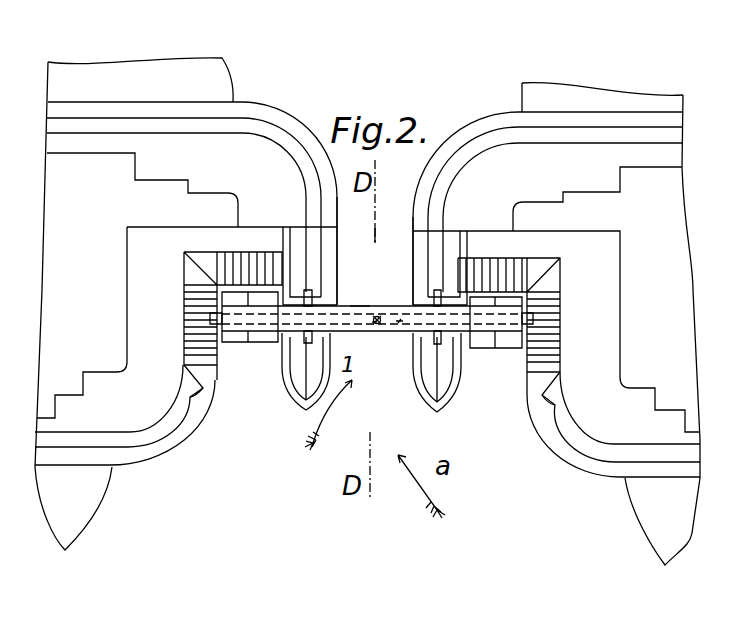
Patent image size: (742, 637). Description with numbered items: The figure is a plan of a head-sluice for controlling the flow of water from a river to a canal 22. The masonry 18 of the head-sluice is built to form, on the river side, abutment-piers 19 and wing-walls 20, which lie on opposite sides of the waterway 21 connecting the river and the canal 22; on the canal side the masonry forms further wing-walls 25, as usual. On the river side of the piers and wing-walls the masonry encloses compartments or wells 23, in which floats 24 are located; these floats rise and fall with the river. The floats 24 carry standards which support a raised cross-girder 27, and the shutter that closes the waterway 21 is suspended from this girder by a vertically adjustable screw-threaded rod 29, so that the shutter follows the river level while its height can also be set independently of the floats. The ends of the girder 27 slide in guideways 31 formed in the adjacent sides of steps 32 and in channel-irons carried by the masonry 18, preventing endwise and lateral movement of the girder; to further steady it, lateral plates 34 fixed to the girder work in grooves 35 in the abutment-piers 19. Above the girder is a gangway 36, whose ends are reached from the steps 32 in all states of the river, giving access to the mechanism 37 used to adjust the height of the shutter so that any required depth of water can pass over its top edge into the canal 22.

The masonry 18 is at (368, 329).
The abutment-piers 19 is at (293, 397).
The wing-walls 20 is at (367, 465).
The waterway 21 is at (357, 301).
The canal 22 is at (397, 198).
The compartments or wells 23 is at (229, 355).
The floats 24 is at (260, 336).
The wing-walls 25 is at (367, 268).
The cross-girder 27 is at (400, 322).
The screw-threaded rod 29 is at (380, 318).
The guideways 31 is at (210, 317).
The steps 32 is at (184, 347).
The lateral plates 34 is at (313, 292).
The grooves 35 is at (375, 264).
The gangway 36 is at (358, 315).
The mechanism 37 is at (375, 323).